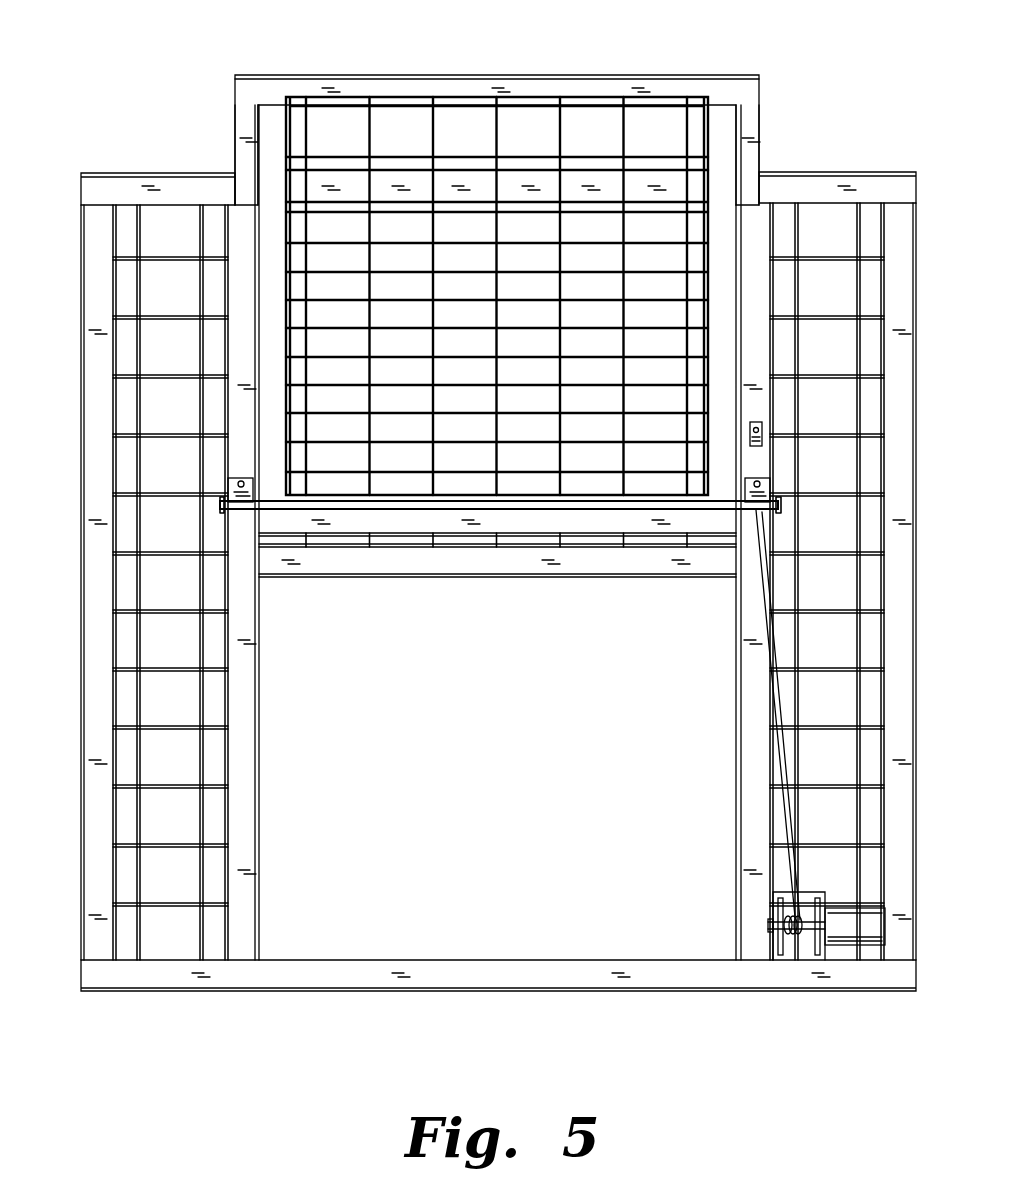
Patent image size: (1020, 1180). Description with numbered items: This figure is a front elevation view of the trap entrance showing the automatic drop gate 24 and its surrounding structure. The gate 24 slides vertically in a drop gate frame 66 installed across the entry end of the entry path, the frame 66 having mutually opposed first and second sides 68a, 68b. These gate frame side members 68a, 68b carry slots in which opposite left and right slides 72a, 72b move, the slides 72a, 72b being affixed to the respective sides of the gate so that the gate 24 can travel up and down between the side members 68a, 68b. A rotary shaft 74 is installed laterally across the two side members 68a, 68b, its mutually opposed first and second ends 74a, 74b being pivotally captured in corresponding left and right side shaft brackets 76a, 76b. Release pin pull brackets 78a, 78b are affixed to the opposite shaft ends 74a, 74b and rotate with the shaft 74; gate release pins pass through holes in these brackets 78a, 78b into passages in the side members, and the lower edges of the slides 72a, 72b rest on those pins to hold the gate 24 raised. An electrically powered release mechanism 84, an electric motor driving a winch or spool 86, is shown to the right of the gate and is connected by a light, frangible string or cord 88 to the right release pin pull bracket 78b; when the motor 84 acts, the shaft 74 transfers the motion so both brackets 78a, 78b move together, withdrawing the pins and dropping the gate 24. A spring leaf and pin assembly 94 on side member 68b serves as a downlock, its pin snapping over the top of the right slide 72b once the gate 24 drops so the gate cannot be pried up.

The automatic drop gate 24 is at (553, 75).
The drop gate frame 66 is at (82, 850).
The first side of gate frame 68a is at (259, 717).
The second side of gate frame 68b is at (736, 727).
The left slide 72a is at (235, 120).
The right slide 72b is at (760, 118).
The rotary shaft 74 is at (463, 509).
The first end of rotary shaft 74a is at (243, 510).
The second end of rotary shaft 74b is at (781, 512).
The left side shaft bracket 76a is at (228, 490).
The right side shaft bracket 76b is at (770, 490).
The left release pin pull bracket 78a is at (240, 478).
The right release pin pull bracket 78b is at (758, 478).
The electrically powered release mechanism 84 is at (848, 945).
The winch or spool 86 is at (808, 935).
The string or cord 88 is at (785, 810).
The spring leaf and pin assembly 94 is at (757, 422).